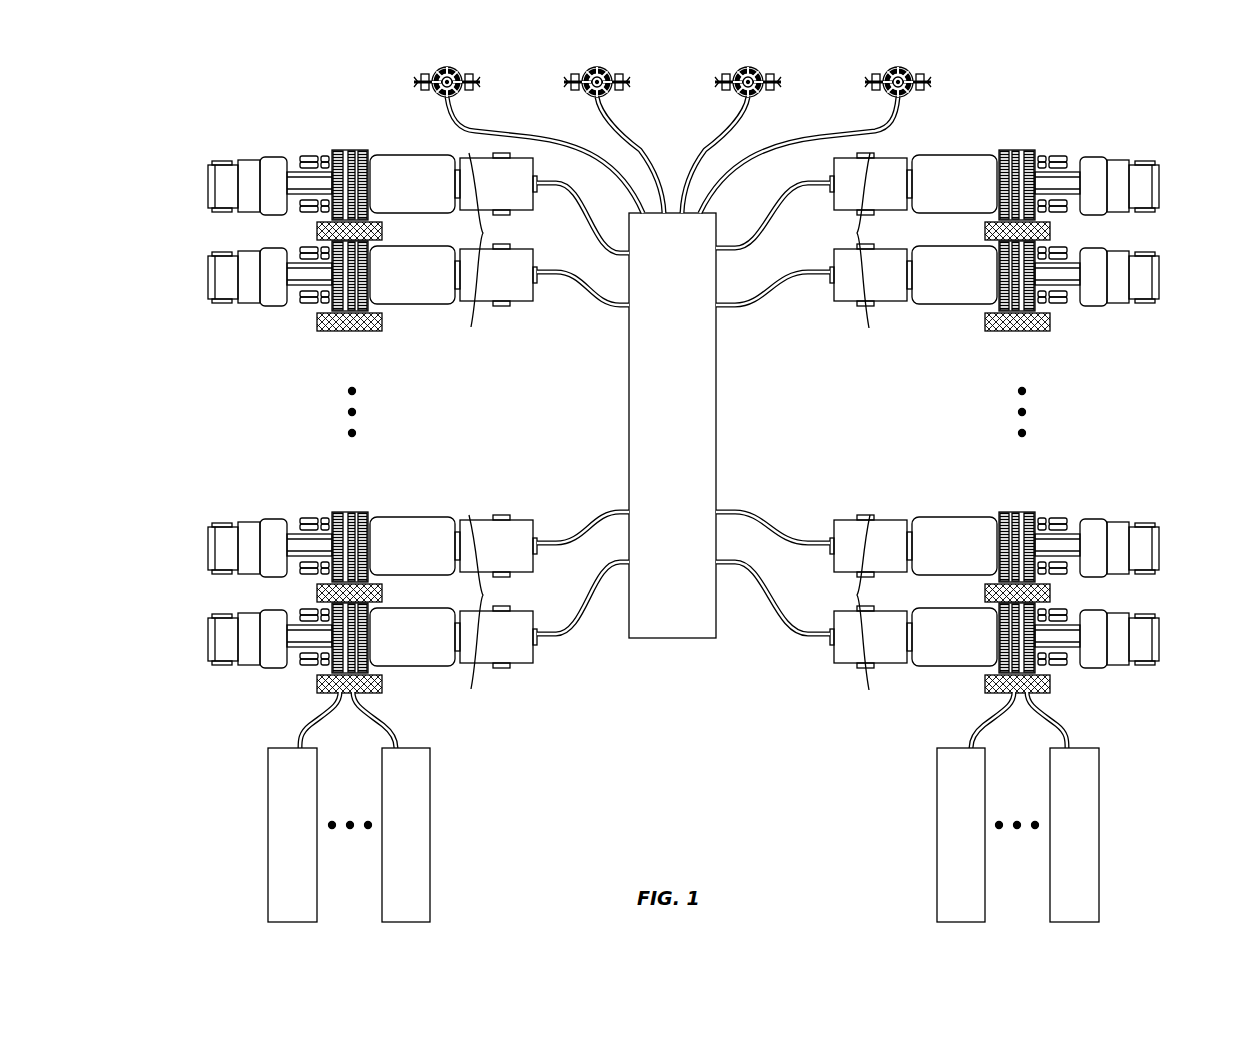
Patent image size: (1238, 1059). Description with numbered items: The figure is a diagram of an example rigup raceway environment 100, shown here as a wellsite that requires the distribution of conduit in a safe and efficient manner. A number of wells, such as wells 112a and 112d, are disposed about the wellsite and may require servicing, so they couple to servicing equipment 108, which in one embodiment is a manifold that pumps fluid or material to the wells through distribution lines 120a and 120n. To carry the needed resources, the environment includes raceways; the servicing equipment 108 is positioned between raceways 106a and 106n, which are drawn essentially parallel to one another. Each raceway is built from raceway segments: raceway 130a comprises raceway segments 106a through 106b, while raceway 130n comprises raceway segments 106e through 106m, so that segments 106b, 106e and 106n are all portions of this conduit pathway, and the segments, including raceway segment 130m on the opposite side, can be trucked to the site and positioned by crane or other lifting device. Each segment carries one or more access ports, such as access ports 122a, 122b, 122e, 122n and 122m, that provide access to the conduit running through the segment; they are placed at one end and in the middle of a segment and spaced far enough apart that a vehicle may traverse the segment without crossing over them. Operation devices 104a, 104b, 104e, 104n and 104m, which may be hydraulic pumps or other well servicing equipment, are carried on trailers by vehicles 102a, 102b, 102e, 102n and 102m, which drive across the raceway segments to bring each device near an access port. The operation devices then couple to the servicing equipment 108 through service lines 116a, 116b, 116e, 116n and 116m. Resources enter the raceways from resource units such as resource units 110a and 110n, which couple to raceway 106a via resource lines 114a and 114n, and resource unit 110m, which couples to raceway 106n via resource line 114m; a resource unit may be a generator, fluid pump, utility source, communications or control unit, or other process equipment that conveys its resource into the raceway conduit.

The rigup raceway environment 100 is at (295, 31).
The vehicle 102a is at (227, 175).
The vehicle 102b is at (227, 266).
The vehicle 102e is at (227, 537).
The vehicle 102n is at (227, 628).
The vehicle 102m is at (1140, 628).
The operation device 104a is at (400, 210).
The operation device 104b is at (400, 301).
The operation device 104e is at (400, 572).
The operation device 104n is at (400, 663).
The operation device 104m is at (973, 663).
The raceway 106a is at (352, 187).
The raceway segment 106b is at (352, 278).
The raceway segment 106e is at (352, 549).
The raceway 106n is at (352, 640).
The raceway segment 106m is at (1015, 641).
The servicing equipment 108 is at (690, 436).
The resource unit 110a is at (268, 828).
The resource unit 110n is at (430, 843).
The resource unit 110m is at (1099, 838).
The well 112a is at (430, 74).
The well 112d is at (880, 74).
The resource line 114a is at (298, 740).
The resource line 114n is at (400, 740).
The resource line 114m is at (1071, 740).
The service line 116a is at (610, 247).
The service line 116b is at (614, 308).
The service line 116e is at (568, 530).
The service line 116n is at (578, 603).
The service line 116m is at (770, 585).
The distribution line 120a is at (491, 128).
The distribution line 120n is at (898, 112).
The access port 122a is at (317, 230).
The access port 122b is at (317, 321).
The access port 122e is at (317, 592).
The access port 122n is at (317, 683).
The access port 122m is at (1052, 683).
The raceway segment 130a is at (500, 240).
The raceway segment 130n is at (500, 602).
The raceway segment 130m is at (852, 602).